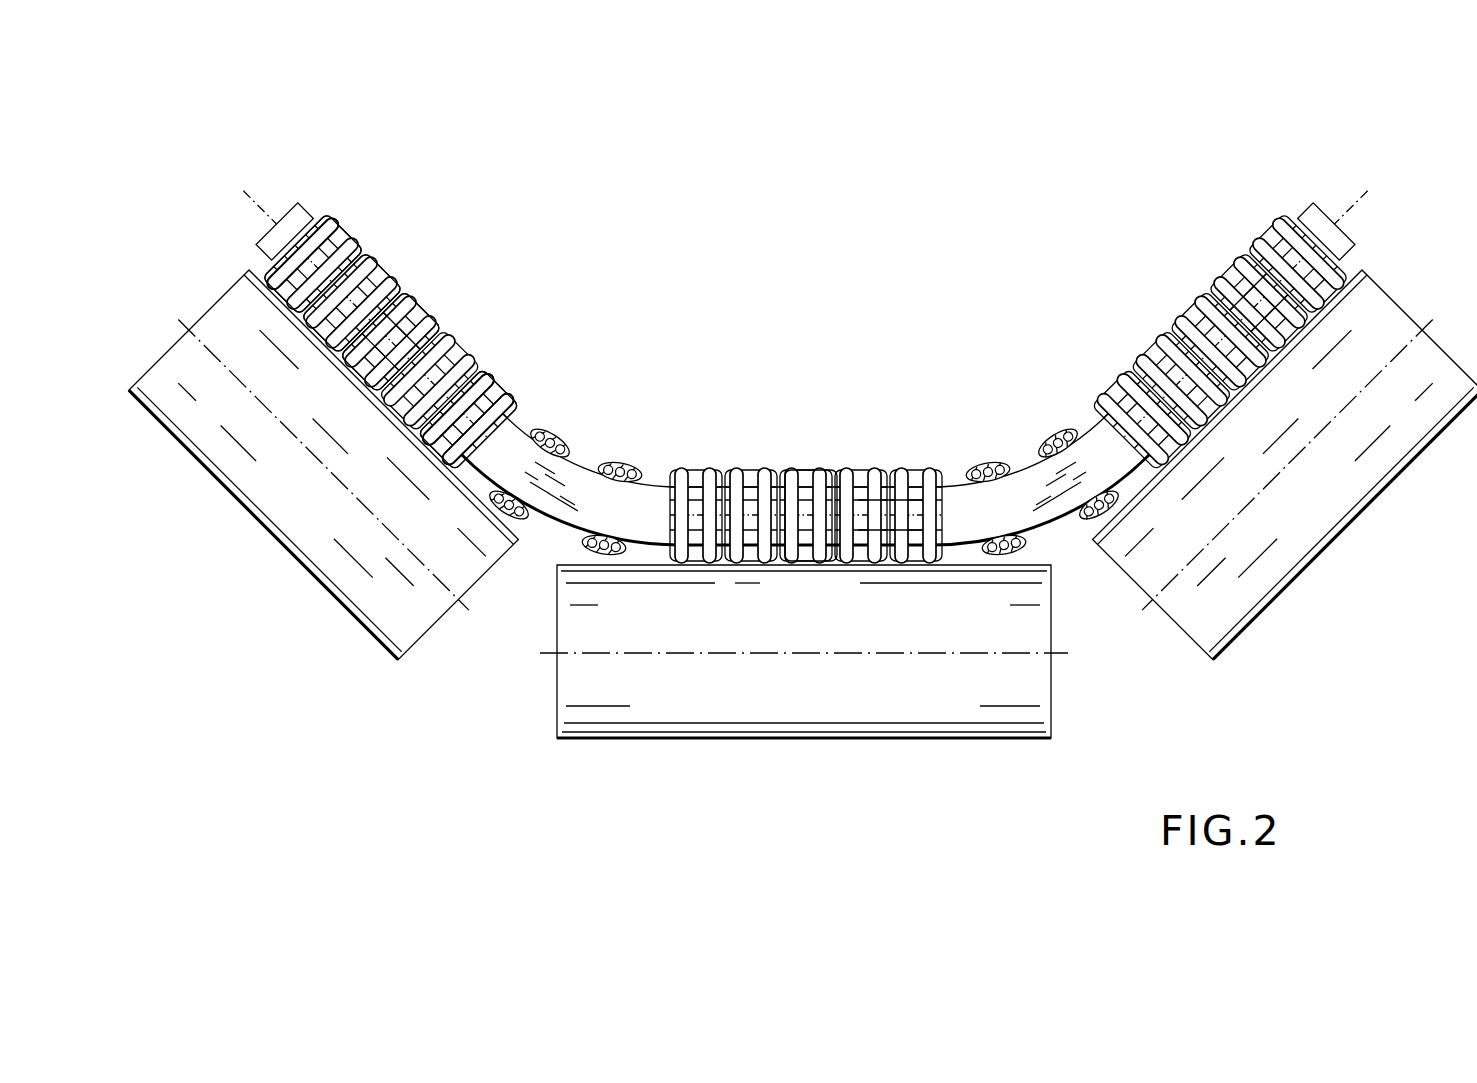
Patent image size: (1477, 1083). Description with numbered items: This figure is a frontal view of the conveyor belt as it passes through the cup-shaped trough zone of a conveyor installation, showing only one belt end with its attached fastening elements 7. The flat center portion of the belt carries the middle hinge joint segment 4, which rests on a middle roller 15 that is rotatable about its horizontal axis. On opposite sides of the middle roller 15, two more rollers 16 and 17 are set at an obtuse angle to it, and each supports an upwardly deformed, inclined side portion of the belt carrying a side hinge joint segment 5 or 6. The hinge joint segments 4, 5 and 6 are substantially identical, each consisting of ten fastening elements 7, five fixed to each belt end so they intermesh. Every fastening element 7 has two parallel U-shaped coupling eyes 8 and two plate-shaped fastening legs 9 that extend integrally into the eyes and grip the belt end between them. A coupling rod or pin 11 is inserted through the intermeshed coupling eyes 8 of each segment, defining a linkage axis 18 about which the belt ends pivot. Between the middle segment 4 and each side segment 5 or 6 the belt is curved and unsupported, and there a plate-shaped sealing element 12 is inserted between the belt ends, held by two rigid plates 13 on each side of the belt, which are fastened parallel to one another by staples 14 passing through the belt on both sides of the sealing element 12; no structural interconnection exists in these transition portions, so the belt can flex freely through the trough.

The hinge joint segment 4 is at (848, 425).
The hinge joint segment 5 is at (480, 301).
The hinge joint segment 6 is at (1162, 306).
The fastening element 7 is at (420, 298).
The coupling eye 8 is at (292, 278).
The fastening leg 9 is at (507, 390).
The coupling rod or pin 11 is at (395, 342).
The sealing element 12 is at (567, 488).
The plate 13 is at (623, 463).
The staple 14 is at (1000, 460).
The middle roller 15 is at (648, 722).
The roller 16 is at (390, 630).
The roller 17 is at (1238, 624).
The linkage axis 18 is at (265, 225).